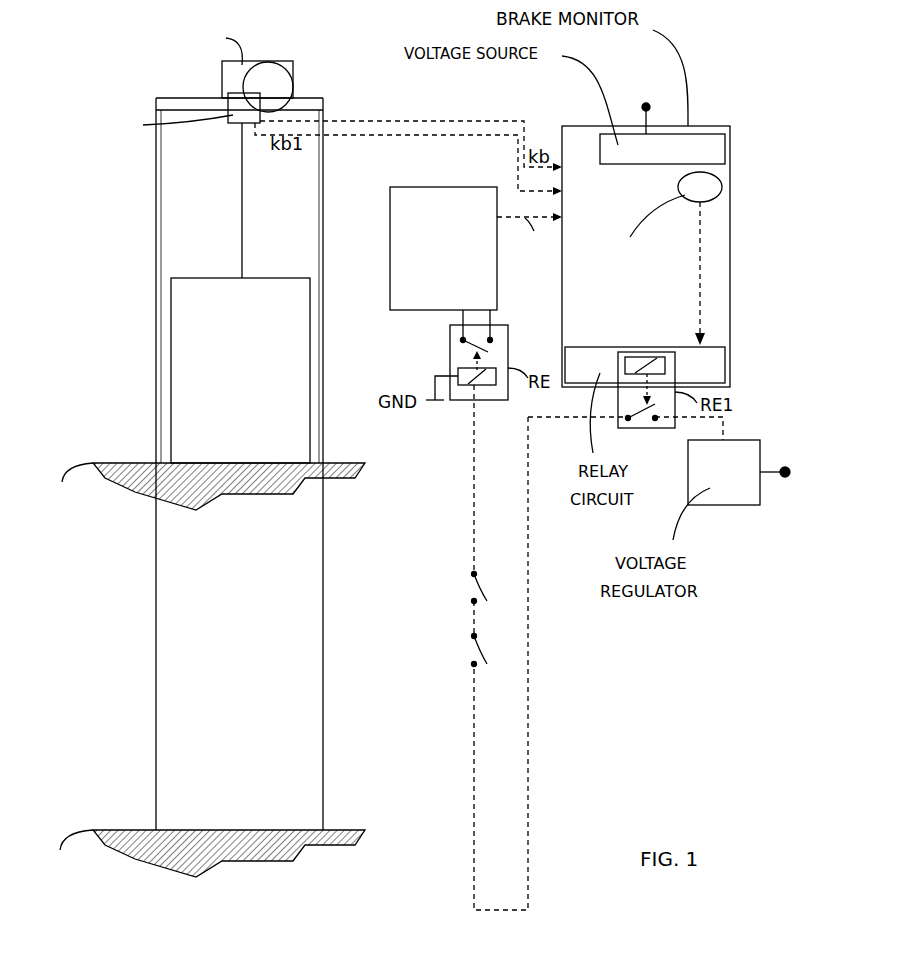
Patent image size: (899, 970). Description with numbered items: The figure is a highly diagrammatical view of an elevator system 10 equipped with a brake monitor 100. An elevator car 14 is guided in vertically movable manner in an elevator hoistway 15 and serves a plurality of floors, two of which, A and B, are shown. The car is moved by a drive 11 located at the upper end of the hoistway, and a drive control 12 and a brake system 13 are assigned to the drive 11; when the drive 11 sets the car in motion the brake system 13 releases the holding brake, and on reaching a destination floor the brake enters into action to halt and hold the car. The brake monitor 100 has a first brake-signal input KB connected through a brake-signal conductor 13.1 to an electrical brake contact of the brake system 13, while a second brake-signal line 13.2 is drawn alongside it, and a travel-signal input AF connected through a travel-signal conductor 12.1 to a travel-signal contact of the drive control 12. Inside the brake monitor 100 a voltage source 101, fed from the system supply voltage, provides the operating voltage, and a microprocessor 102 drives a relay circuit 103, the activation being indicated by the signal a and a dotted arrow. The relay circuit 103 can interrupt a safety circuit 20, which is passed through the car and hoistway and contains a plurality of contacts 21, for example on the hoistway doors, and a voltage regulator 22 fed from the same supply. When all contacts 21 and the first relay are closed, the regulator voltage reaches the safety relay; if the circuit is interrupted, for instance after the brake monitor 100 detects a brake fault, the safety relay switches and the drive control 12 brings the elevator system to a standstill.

The elevator system 10 is at (67, 60).
The drive 11 is at (273, 58).
The drive control 12 is at (412, 312).
The travel-signal conductor 12.1 is at (529, 240).
The brake system 13 is at (230, 125).
The brake-signal conductor 13.1 is at (465, 120).
The brake signal line (kb1) 13.2 is at (448, 137).
The elevator car 14 is at (205, 290).
The elevator hoistway 15 is at (155, 663).
The safety circuit 20 is at (528, 716).
The contacts 21 is at (450, 602).
The voltage regulator 22 is at (738, 497).
The brake monitor 100 is at (702, 126).
The voltage source 101 is at (722, 146).
The microprocessor 102 is at (708, 188).
The relay circuit 103 is at (717, 358).